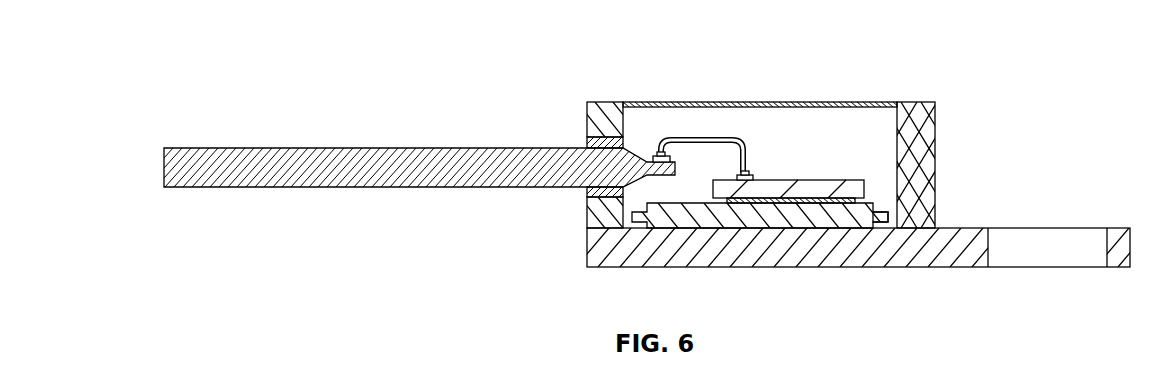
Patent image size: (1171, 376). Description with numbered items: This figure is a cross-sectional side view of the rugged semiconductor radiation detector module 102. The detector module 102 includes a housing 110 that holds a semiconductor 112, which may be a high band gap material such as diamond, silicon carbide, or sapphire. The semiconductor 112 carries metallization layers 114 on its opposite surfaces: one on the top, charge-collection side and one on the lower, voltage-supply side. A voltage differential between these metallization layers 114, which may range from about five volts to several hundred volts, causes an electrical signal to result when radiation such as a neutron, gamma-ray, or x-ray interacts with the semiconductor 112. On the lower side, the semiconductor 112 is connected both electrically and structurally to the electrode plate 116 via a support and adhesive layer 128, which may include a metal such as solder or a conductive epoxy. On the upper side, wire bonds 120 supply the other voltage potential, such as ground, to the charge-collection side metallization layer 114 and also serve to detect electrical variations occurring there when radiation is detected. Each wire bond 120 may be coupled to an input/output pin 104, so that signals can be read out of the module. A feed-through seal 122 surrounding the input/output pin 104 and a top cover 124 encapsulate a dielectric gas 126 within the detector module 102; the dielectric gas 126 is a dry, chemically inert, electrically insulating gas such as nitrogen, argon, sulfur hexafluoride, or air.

The detector module 102 is at (1005, 30).
The input/output pin 104 is at (237, 148).
The housing 110 is at (590, 222).
The semiconductor 112 is at (872, 188).
The metallization layer 114 is at (777, 180).
The electrode plate 116 is at (853, 218).
The wire bond 120 is at (708, 140).
The feed-through seal 122 is at (587, 147).
The top cover 124 is at (886, 96).
The dielectric gas 126 is at (888, 135).
The support and adhesive layer 128 is at (888, 215).